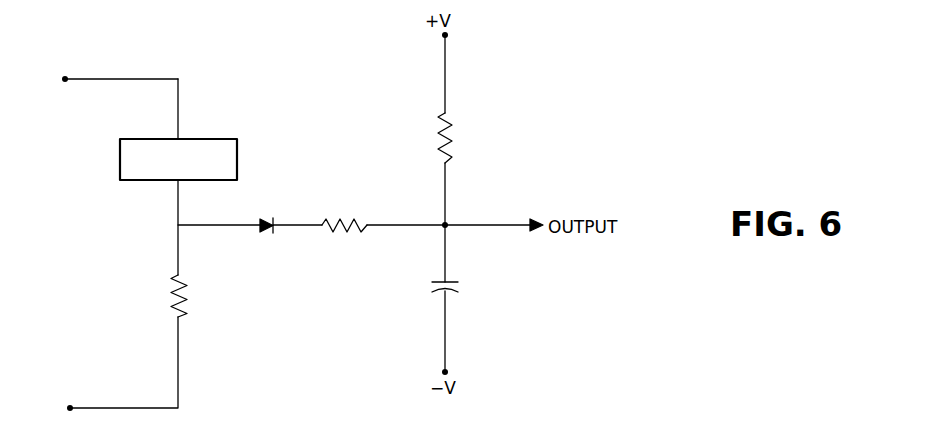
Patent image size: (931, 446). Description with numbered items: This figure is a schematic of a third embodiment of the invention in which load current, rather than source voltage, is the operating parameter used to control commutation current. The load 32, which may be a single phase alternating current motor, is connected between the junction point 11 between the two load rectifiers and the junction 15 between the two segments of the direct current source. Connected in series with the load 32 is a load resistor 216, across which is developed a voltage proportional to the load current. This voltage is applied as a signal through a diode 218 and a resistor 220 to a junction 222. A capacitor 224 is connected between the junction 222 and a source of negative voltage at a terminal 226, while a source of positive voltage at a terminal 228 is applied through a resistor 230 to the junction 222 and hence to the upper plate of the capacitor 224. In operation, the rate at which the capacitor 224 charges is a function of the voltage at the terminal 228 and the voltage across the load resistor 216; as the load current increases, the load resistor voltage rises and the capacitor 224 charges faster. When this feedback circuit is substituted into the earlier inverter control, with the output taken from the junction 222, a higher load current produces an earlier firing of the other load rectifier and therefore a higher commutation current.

The junction point 11 is at (63, 76).
The junction 15 is at (68, 405).
The load 32 is at (240, 135).
The load resistor 216 is at (190, 298).
The diode 218 is at (282, 204).
The resistor 220 is at (357, 205).
The junction 222 is at (452, 222).
The capacitor 224 is at (460, 288).
The terminal 226 is at (448, 370).
The terminal 228 is at (448, 37).
The resistor 230 is at (456, 130).